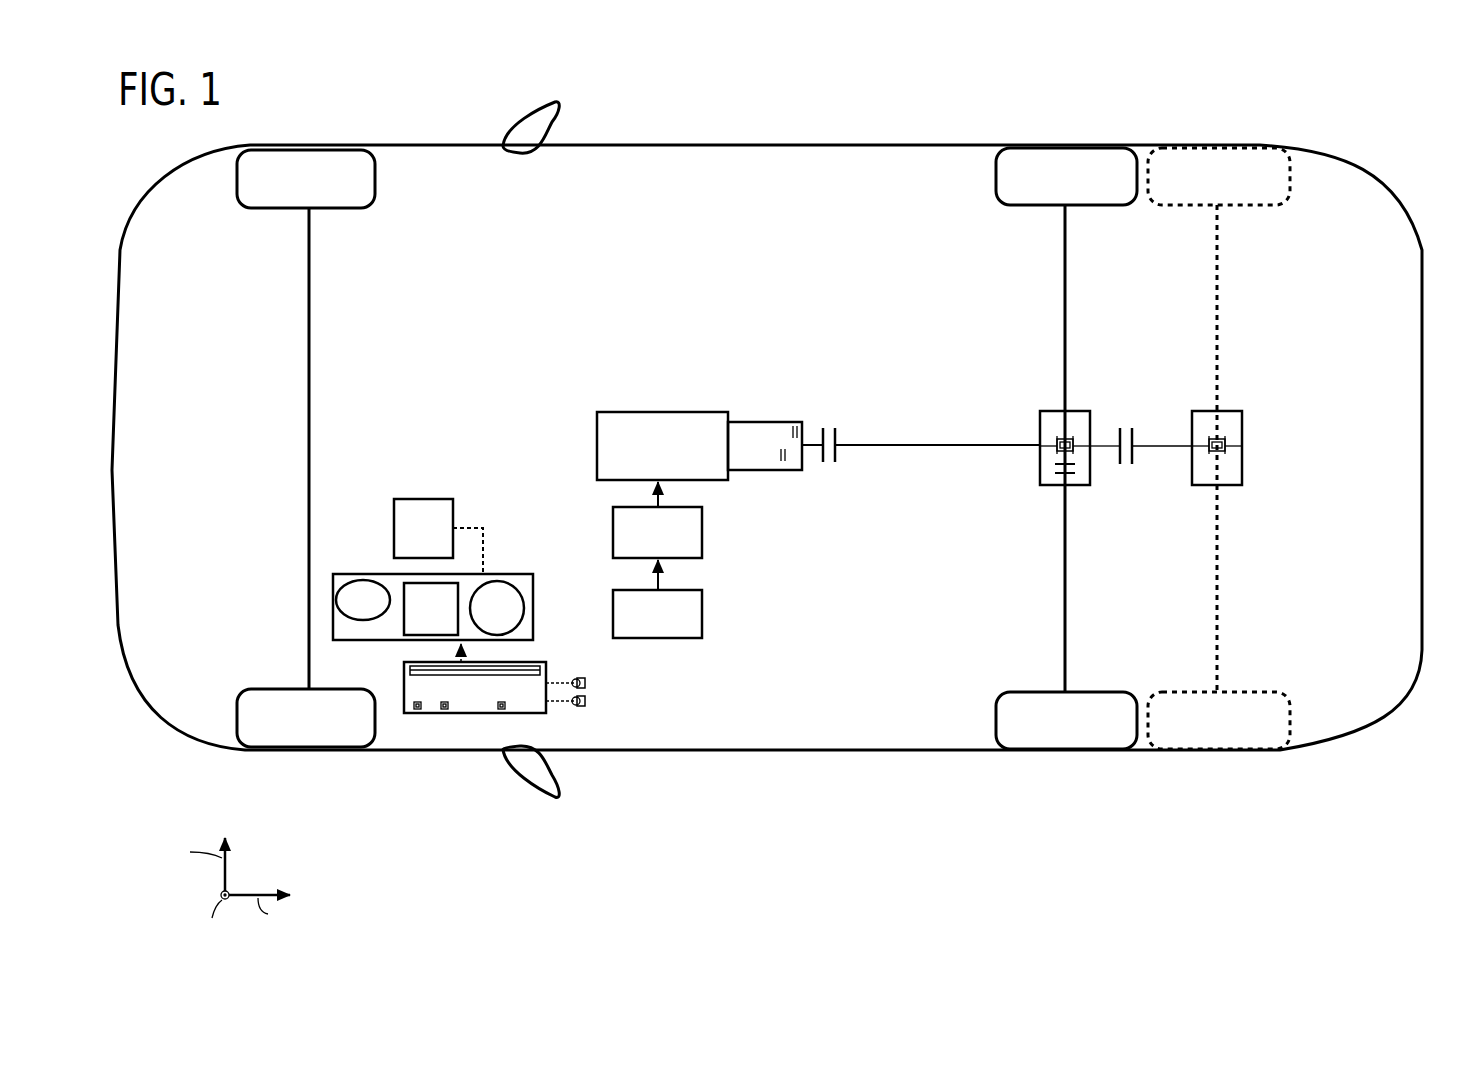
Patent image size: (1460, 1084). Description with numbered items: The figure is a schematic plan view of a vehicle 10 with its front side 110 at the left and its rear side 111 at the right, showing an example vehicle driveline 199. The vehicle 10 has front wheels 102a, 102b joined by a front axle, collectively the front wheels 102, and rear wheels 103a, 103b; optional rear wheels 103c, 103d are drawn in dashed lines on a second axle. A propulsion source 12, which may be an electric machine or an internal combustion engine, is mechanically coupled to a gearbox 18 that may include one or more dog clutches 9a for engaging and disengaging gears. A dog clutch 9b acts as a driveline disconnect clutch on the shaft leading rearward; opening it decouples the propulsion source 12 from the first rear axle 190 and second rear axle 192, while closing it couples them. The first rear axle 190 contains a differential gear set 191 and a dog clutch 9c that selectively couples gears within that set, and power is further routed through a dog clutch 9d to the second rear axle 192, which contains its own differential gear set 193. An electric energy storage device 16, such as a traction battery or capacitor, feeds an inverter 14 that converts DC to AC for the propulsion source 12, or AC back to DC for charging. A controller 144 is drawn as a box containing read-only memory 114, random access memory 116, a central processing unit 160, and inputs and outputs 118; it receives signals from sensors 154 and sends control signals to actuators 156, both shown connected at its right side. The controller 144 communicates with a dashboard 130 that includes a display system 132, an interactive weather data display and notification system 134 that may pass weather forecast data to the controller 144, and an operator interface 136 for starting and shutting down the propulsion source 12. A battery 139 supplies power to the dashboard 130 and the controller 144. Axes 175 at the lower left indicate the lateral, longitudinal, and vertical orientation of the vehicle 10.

The vehicle 10 is at (880, 145).
The front side 110 is at (120, 211).
The rear side 111 is at (1418, 152).
The vehicle driveline 199 is at (706, 286).
The front wheels 102 is at (226, 210).
The front wheel 102a is at (340, 208).
The front wheel 102b is at (268, 747).
The rear wheel 103a is at (1063, 148).
The rear wheel 103b is at (1065, 749).
The optional rear wheel 103c is at (1217, 148).
The optional rear wheel 103d is at (1217, 749).
The propulsion source 12 is at (662, 446).
The inverter 14 is at (657, 520).
The electric energy storage device 16 is at (657, 599).
The gearbox 18 is at (765, 446).
The dog clutch 9a is at (793, 467).
The dog clutch 9b is at (844, 439).
The dog clutch 9c is at (1056, 478).
The dog clutch 9d is at (1141, 432).
The first rear axle 190 is at (1077, 507).
The differential gear set 191 is at (1073, 438).
The second rear axle 192 is at (1237, 507).
The differential gear set 193 is at (1225, 438).
The battery 139 is at (438, 536).
The dashboard 130 is at (512, 556).
The display system 132 is at (363, 600).
The interactive weather data display and notification system 134 is at (431, 609).
The operator interface 136 is at (497, 608).
The controller 144 is at (475, 678).
The read-only memory 114 is at (417, 709).
The random access memory 116 is at (446, 709).
The central processing unit 160 is at (502, 709).
The inputs and outputs 118 is at (527, 676).
The sensors 154 is at (589, 682).
The actuators 156 is at (589, 703).
The axes 175 is at (254, 845).